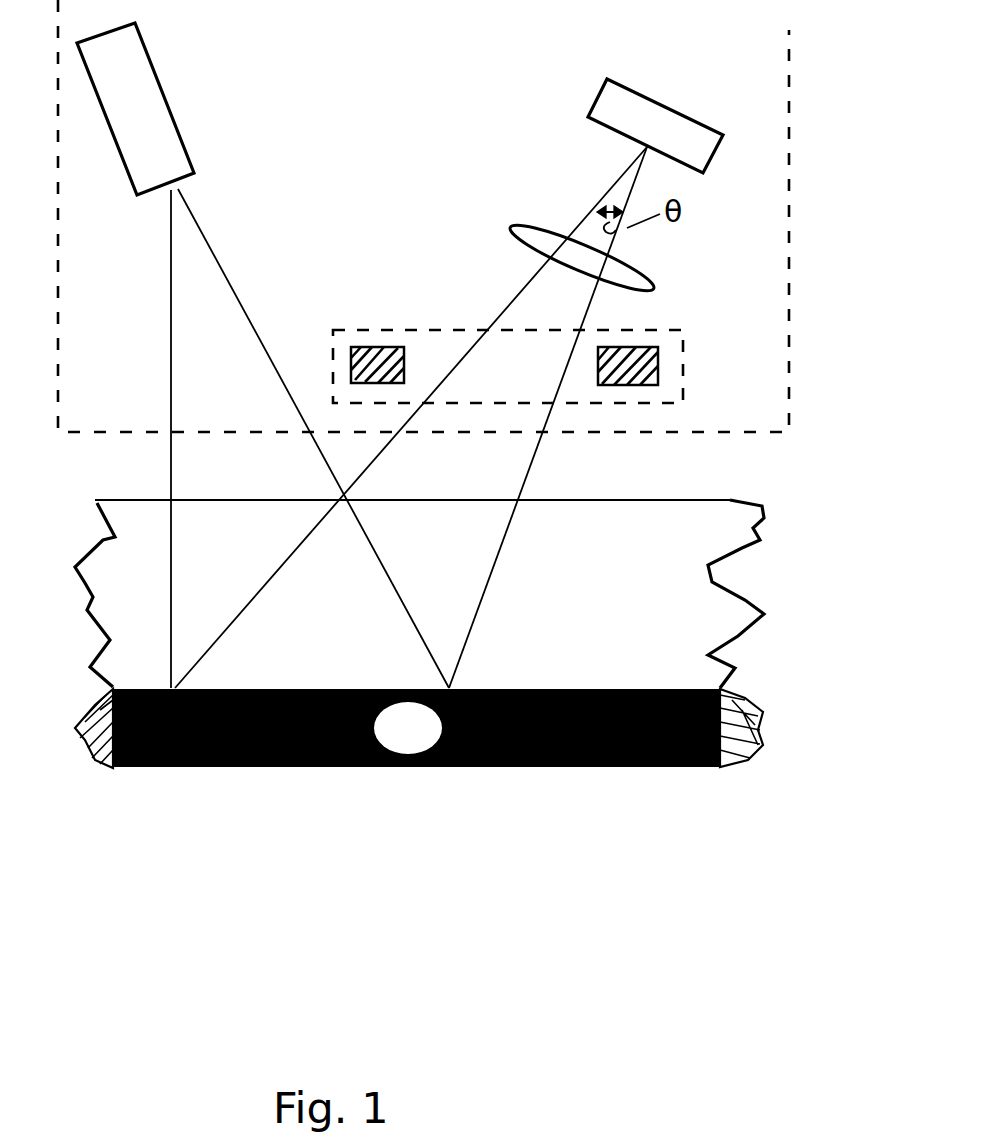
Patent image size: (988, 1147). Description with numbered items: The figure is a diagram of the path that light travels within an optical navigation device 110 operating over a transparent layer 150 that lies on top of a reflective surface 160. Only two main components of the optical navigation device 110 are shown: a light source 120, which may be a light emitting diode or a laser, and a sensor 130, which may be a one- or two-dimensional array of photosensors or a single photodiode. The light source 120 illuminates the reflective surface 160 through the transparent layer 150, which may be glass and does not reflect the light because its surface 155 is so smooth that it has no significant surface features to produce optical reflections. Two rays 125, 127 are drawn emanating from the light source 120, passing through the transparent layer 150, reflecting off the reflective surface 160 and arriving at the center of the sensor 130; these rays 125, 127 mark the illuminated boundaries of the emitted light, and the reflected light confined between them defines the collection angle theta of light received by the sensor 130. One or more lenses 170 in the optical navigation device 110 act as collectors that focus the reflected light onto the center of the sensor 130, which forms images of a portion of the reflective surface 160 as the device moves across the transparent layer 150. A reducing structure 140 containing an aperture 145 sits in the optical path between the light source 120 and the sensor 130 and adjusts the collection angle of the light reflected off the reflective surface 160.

The optical navigation device 110 is at (800, 42).
The light source 120 is at (170, 66).
The ray 125 is at (171, 330).
The ray 127 is at (236, 308).
The sensor 130 is at (590, 78).
The reducing structure 140 is at (348, 332).
The aperture 145 is at (437, 357).
The transparent layer 150 is at (690, 536).
The surface 155 is at (614, 497).
The reflective surface 160 is at (682, 767).
The lenses 170 is at (655, 270).